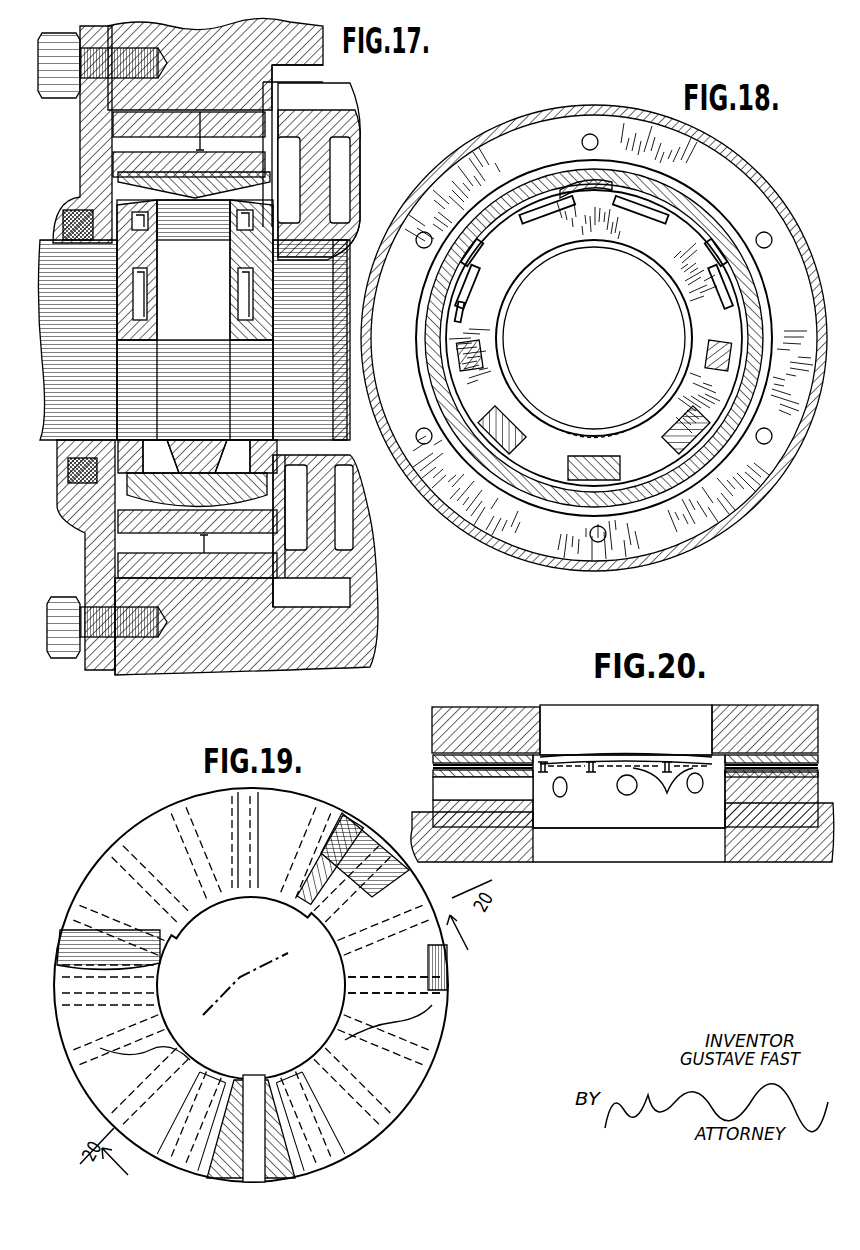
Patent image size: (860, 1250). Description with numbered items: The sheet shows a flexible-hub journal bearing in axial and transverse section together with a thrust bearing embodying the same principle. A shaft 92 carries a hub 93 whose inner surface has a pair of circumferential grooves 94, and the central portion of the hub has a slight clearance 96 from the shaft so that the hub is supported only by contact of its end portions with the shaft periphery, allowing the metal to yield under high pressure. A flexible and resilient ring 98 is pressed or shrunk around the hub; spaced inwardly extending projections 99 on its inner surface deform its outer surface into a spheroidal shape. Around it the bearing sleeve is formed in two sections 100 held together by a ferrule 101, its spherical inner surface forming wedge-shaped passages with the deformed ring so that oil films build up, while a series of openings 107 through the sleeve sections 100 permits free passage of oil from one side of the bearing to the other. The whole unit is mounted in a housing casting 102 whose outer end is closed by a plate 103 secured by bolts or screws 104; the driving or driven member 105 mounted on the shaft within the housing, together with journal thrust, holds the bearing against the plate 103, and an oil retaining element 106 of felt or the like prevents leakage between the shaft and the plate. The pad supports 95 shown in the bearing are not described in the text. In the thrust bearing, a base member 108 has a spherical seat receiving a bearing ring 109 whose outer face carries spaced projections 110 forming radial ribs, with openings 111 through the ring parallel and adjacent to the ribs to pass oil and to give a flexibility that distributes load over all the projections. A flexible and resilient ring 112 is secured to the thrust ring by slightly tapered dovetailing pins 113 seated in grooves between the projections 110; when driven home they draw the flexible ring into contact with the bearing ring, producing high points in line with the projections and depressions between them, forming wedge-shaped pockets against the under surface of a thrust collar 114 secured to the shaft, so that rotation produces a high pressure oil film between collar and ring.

In FIG. 17, the shaft 92 is at (330, 262).
In FIG. 17, the hub 93 is at (262, 335).
In FIG. 18, the hub 93 is at (647, 242).
In FIG. 17, the circumferential grooves 94 is at (243, 455).
In FIG. 18, the circumferential grooves 94 is at (520, 425).
In FIG. 17, the pad supports 95 is at (280, 513).
In FIG. 18, the pad supports 95 is at (721, 364).
In FIG. 17, the clearance 96 is at (192, 437).
In FIG. 18, the clearance 96 is at (585, 437).
In FIG. 17, the ring 98 is at (197, 192).
In FIG. 18, the ring 98 is at (612, 172).
In FIG. 17, the inwardly extending projections 99 is at (197, 195).
In FIG. 18, the inwardly extending projections 99 is at (590, 176).
In FIG. 17, the bearing sleeve sections 100 is at (130, 167).
In FIG. 18, the bearing sleeve sections 100 is at (555, 543).
In FIG. 17, the ferrule 101 is at (255, 655).
In FIG. 18, the ferrule 101 is at (612, 560).
In FIG. 17, the housing casting 102 is at (147, 658).
In FIG. 17, the plate 103 is at (100, 660).
In FIG. 17, the bolts or screws 104 is at (63, 655).
In FIG. 17, the driving or driven member 105 is at (345, 567).
In FIG. 17, the oil retaining element 106 is at (72, 473).
In FIG. 17, the openings 107 is at (270, 100).
In FIG. 18, the openings 107 is at (592, 133).
In FIG. 20, the base member 108 is at (502, 853).
In FIG. 20, the bearing ring 109 is at (533, 820).
In FIG. 19, the projections 110 is at (122, 1108).
In FIG. 20, the projections 110 is at (663, 792).
In FIG. 19, the openings 111 is at (253, 1080).
In FIG. 20, the openings 111 is at (437, 800).
In FIG. 19, the flexible and resilient ring 112 is at (392, 862).
In FIG. 20, the flexible and resilient ring 112 is at (637, 757).
In FIG. 19, the dovetailing pins 113 is at (102, 1052).
In FIG. 20, the dovetailing pins 113 is at (590, 762).
In FIG. 19, the thrust collar 114 is at (205, 890).
In FIG. 20, the thrust collar 114 is at (770, 718).